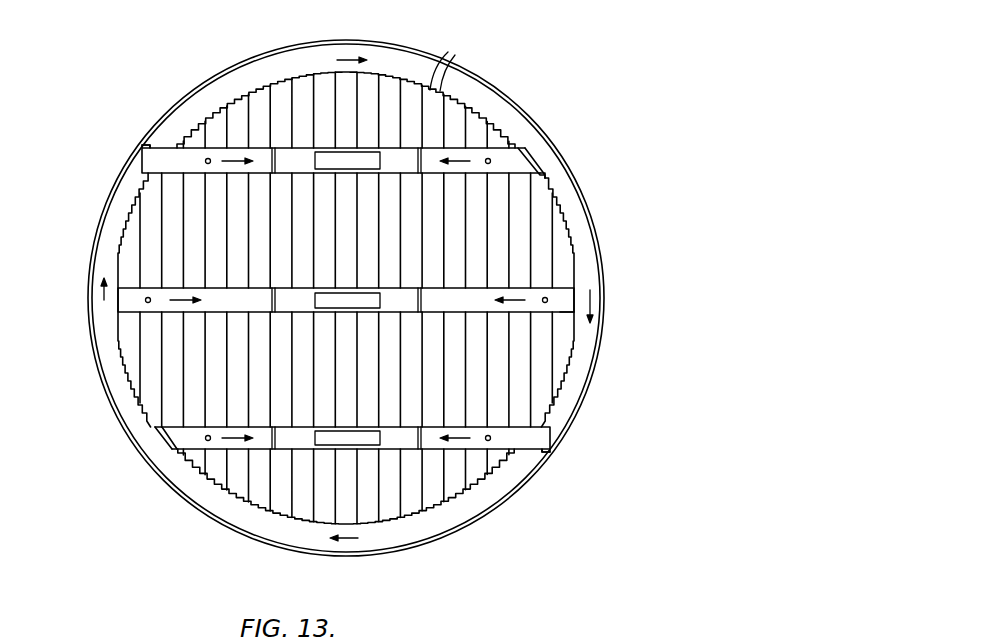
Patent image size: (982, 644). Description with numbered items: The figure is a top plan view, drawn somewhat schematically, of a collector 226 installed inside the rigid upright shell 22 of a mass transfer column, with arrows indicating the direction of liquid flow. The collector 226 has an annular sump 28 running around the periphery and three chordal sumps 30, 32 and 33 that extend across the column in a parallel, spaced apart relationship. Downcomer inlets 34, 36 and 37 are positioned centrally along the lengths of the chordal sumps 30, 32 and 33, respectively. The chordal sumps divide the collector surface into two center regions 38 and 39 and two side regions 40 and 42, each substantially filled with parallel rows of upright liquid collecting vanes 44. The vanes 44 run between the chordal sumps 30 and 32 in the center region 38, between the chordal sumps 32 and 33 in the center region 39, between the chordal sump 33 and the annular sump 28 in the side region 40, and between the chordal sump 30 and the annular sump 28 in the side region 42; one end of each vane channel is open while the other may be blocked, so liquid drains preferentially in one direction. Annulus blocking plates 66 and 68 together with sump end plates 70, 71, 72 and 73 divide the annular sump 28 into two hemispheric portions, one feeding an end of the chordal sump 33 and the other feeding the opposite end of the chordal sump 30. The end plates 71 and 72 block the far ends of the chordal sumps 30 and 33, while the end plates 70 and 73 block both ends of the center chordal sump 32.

The collector 226 is at (100, 102).
The shell 22 is at (199, 95).
The annular sump 28 is at (496, 99).
The chordal sump 30 is at (478, 449).
The chordal sump 32 is at (562, 313).
The chordal sump 33 is at (547, 177).
The downcomer inlet 34 is at (352, 440).
The downcomer inlet 36 is at (352, 300).
The downcomer inlet 37 is at (352, 162).
The center region 38 is at (534, 381).
The center region 39 is at (576, 265).
The side region 40 is at (299, 80).
The side region 42 is at (279, 503).
The liquid collecting vane 44 is at (451, 58).
The annulus blocking plate 66 is at (147, 153).
The annulus blocking plate 68 is at (543, 453).
The sump end plate 70 is at (117, 299).
The sump end plate 71 is at (535, 152).
The sump end plate 72 is at (157, 433).
The sump end plate 73 is at (574, 302).